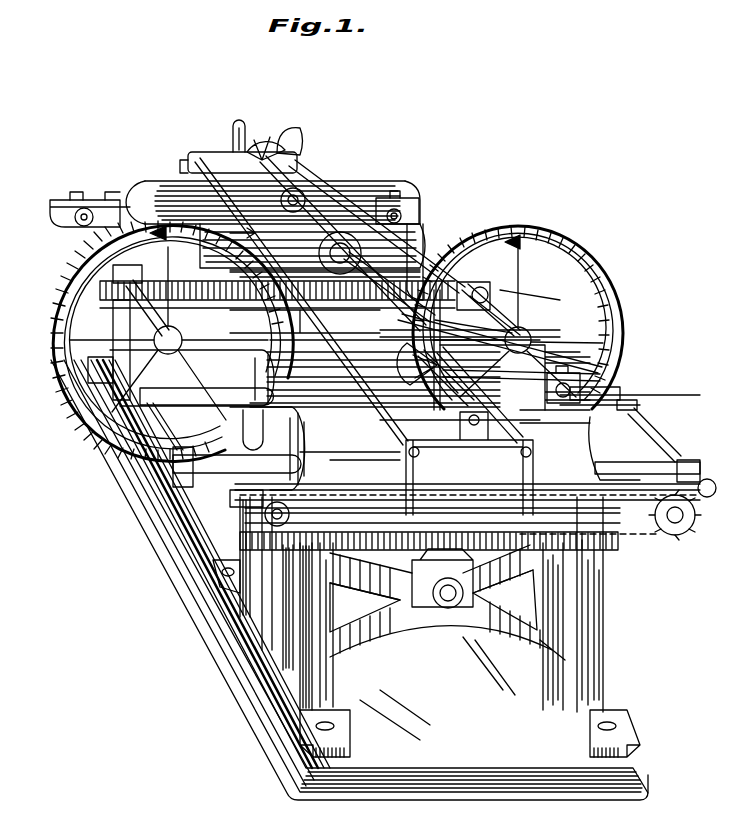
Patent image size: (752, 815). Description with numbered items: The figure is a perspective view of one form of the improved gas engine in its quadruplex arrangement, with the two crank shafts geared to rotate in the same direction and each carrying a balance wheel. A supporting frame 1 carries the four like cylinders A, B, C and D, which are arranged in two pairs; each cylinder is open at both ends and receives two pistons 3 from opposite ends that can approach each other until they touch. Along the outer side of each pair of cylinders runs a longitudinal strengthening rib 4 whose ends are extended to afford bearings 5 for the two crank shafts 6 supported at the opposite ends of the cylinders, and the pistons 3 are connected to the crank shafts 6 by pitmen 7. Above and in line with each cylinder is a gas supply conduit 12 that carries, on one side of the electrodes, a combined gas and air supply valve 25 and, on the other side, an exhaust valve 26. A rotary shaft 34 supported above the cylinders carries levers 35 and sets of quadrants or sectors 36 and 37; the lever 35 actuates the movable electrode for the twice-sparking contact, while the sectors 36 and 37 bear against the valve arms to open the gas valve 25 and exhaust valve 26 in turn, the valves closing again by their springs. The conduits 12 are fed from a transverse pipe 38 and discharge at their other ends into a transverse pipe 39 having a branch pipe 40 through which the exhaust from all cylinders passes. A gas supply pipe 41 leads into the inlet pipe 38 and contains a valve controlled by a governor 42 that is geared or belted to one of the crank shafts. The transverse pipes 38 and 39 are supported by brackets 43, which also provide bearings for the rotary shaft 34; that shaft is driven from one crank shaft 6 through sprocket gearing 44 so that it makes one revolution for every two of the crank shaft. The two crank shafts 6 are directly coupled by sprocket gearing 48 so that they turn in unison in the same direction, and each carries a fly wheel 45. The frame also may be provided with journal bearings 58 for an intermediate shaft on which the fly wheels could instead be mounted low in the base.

The supporting frame 1 is at (143, 358).
The pistons 3 is at (270, 390).
The longitudinal strengthening rib 4 is at (100, 213).
The bearings 5 is at (68, 208).
The crank shafts 6 is at (132, 306).
The pitmen 7 is at (402, 398).
The gas supply conduit 12 is at (385, 332).
The combined gas and air supply valve 25 is at (495, 415).
The exhaust valve 26 is at (446, 394).
The rotary shaft 34 is at (236, 124).
The lever 35 is at (330, 182).
The quadrant or sector 36 is at (290, 136).
The quadrant or sector 37 is at (264, 133).
The transverse pipe 38 is at (300, 165).
The transverse pipe 39 is at (186, 158).
The branch pipe 40 is at (305, 321).
The gas supply pipe 41 is at (500, 298).
The governor 42 is at (428, 258).
The brackets 43 is at (212, 155).
The sprocket gearing 44 is at (320, 256).
The fly wheel 45 is at (46, 340).
The sprocket gearing 48 is at (658, 532).
The journal bearings 58 is at (446, 565).
The cylinder A is at (273, 202).
The cylinder B is at (269, 253).
The cylinder C is at (375, 379).
The cylinder D is at (445, 402).